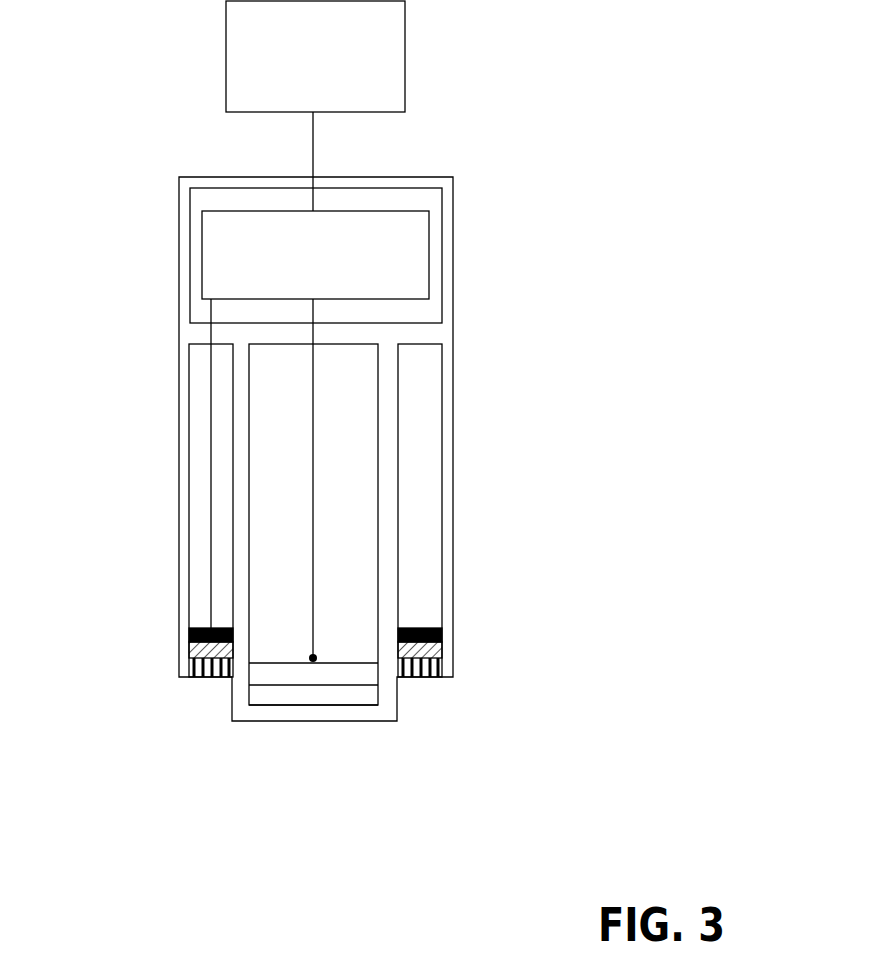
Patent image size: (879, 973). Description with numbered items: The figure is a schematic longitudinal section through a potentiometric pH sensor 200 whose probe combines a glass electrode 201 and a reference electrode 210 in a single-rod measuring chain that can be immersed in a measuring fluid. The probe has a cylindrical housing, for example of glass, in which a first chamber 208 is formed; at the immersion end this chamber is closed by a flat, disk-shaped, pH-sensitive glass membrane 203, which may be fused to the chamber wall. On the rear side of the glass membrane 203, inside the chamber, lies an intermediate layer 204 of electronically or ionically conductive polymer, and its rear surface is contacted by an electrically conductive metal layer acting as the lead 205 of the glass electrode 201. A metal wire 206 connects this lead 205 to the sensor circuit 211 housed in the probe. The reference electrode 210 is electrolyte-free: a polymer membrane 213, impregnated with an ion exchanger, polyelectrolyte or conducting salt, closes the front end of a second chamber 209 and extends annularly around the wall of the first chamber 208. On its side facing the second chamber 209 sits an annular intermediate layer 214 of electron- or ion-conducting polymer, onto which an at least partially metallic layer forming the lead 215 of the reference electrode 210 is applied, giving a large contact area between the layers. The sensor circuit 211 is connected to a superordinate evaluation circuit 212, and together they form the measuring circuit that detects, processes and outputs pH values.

The potentiometric pH sensor 200 is at (506, 112).
The glass electrode 201 is at (422, 698).
The glass membrane 203 is at (315, 712).
The intermediate layer 204 is at (277, 694).
The lead 205 is at (353, 676).
The metal wire 206 is at (313, 497).
The first chamber 208 is at (353, 577).
The second chamber 209 is at (205, 583).
The reference electrode 210 is at (121, 468).
The sensor circuit 211 is at (243, 244).
The evaluation circuit 212 is at (243, 32).
The polymer membrane 213 is at (210, 667).
The intermediate layer 214 is at (190, 660).
The lead 215 is at (433, 623).